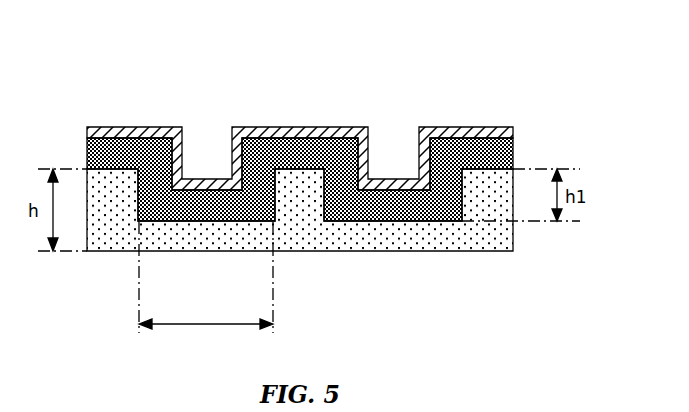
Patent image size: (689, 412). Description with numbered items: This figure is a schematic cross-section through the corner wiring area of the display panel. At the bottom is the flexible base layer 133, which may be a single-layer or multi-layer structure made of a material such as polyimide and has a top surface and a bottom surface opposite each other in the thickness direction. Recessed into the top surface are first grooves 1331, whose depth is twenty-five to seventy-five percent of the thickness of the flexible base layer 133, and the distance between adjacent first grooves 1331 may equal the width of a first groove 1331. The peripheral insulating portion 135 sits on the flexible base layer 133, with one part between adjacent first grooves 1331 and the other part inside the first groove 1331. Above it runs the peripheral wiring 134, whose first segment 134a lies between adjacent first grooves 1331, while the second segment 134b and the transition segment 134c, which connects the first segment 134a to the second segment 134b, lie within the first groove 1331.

The flexible base layer 133 is at (408, 252).
The first groove 1331 is at (221, 231).
The peripheral wiring 134 is at (300, 112).
The first segment 134a is at (106, 128).
The second segment 134b is at (215, 179).
The transition segment 134c is at (205, 179).
The peripheral insulating portion 135 is at (502, 152).